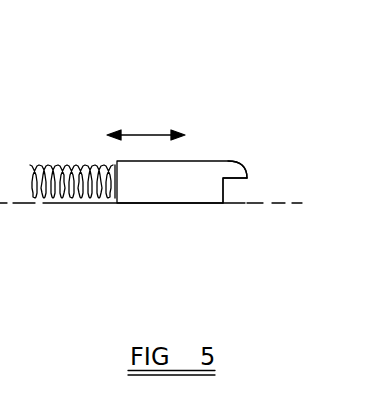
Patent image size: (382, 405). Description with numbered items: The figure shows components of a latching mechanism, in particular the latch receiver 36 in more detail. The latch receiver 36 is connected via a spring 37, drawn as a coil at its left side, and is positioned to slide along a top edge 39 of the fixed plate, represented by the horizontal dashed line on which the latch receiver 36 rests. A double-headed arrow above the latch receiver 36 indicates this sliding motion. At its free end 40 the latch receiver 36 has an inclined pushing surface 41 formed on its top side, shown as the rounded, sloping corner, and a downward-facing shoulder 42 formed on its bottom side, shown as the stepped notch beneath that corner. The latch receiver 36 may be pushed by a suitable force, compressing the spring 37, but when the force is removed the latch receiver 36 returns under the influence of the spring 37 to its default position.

The latch receiver 36 is at (173, 192).
The spring 37 is at (70, 165).
The top edge 39 is at (78, 206).
The free end 40 is at (220, 112).
The inclined pushing surface 41 is at (243, 172).
The downward-facing shoulder 42 is at (236, 178).